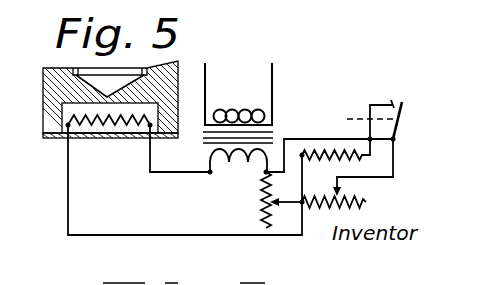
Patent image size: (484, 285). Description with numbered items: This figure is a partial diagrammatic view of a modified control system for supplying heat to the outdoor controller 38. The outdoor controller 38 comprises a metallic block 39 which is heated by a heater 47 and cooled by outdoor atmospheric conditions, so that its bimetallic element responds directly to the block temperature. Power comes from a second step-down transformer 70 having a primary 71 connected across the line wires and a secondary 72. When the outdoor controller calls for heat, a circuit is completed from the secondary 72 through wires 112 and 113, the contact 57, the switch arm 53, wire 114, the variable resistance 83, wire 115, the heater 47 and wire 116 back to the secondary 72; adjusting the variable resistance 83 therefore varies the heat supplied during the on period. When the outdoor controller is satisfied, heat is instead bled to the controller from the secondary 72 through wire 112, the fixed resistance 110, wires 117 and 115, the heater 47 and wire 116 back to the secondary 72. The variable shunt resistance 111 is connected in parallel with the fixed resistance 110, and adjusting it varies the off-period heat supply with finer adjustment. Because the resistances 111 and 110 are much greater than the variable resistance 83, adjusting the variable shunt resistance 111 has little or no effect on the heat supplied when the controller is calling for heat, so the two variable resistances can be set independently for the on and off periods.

The metallic block 39 is at (50, 97).
The outdoor controller 38 is at (60, 143).
The heater 47 is at (110, 126).
The wire 115 is at (176, 235).
The wire 116 is at (167, 172).
The second step-down transformer 70 is at (280, 120).
The primary 71 is at (240, 109).
The secondary 72 is at (246, 163).
The wire 112 is at (292, 139).
The contact 57 is at (385, 101).
The switch arm 53 is at (403, 104).
The wire 113 is at (360, 121).
The wire 114 is at (394, 162).
The fixed resistance 110 is at (322, 162).
The variable resistance 83 is at (368, 201).
The variable shunt resistance 111 is at (262, 207).
The wire 117 is at (301, 193).